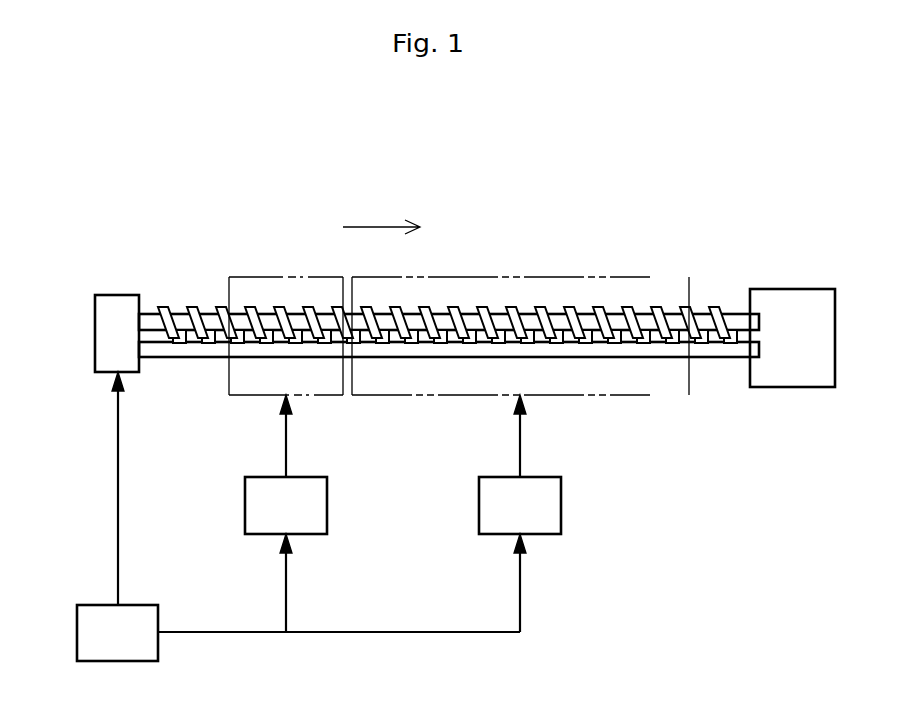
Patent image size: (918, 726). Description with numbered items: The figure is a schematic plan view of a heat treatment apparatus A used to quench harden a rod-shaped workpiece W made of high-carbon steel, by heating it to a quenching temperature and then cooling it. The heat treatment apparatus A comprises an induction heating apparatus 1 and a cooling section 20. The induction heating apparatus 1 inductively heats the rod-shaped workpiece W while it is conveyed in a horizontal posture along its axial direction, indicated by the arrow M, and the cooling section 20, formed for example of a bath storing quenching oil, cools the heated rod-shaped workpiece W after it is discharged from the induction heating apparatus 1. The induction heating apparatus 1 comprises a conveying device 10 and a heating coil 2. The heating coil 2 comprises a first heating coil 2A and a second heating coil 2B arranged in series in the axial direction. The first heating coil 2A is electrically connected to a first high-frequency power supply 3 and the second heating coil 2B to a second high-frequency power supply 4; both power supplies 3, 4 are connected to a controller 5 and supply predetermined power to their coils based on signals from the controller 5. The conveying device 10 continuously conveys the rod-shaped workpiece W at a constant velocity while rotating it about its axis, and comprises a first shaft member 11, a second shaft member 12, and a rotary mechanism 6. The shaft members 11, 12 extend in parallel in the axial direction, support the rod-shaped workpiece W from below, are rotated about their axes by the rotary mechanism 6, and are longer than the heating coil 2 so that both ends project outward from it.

The induction heating apparatus 1 is at (436, 308).
The heating coil 2 is at (459, 299).
The first heating coil 2A is at (271, 277).
The second heating coil 2B is at (480, 277).
The first high-frequency power supply 3 is at (317, 505).
The second high-frequency power supply 4 is at (552, 505).
The controller 5 is at (90, 632).
The rotary mechanism 6 is at (107, 337).
The conveying device 10 is at (436, 283).
The first shaft member 11 is at (185, 360).
The second shaft member 12 is at (180, 309).
The cooling section 20 is at (794, 303).
The heat treatment apparatus A is at (709, 211).
The conveying direction arrow M is at (373, 227).
The rod-shaped workpiece W is at (735, 341).